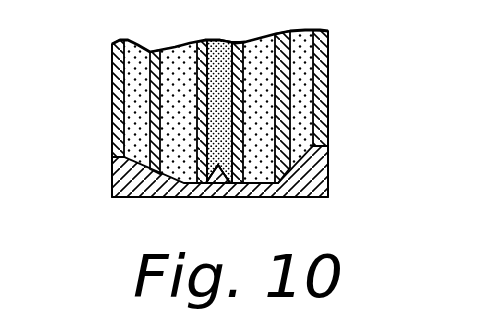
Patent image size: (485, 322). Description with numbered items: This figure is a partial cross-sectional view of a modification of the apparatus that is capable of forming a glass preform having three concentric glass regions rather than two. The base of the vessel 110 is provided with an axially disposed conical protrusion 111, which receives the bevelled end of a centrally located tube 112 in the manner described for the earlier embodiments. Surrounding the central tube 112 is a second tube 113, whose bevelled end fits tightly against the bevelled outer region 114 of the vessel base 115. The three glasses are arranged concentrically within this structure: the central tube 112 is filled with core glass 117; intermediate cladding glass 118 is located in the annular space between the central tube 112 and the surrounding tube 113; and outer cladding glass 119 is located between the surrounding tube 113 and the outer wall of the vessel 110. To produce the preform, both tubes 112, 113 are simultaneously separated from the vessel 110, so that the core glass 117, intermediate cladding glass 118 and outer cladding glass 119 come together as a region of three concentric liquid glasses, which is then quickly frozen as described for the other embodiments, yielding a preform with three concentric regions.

The vessel 110 is at (326, 88).
The conical protrusion 111 is at (218, 168).
The centrally located tube 112 is at (240, 42).
The tube 113 is at (287, 33).
The bevelled outer region 114 is at (308, 160).
The vessel base 115 is at (316, 198).
The core glass 117 is at (217, 47).
The intermediate cladding glass 118 is at (177, 60).
The outer cladding glass 119 is at (137, 86).